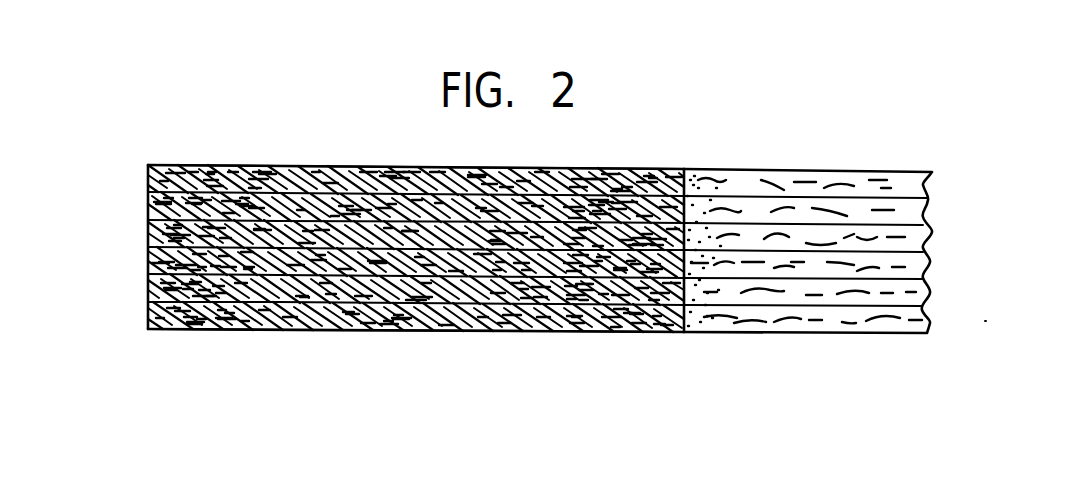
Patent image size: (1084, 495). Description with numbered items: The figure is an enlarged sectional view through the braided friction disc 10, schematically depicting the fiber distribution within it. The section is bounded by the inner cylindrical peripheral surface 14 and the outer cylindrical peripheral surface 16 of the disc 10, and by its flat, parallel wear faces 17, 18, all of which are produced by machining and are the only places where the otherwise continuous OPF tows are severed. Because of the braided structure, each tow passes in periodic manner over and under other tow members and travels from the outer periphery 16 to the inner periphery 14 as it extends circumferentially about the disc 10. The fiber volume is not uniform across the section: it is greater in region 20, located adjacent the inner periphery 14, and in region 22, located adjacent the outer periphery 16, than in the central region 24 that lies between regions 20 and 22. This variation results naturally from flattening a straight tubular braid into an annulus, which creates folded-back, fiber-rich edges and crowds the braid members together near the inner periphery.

The friction disc 10 is at (236, 116).
The inner cylindrical peripheral surface 14 is at (685, 210).
The outer cylindrical peripheral surface 16 is at (148, 213).
The wear face 17 is at (289, 166).
The wear face 18 is at (500, 334).
The region adjacent inner periphery 20 is at (684, 344).
The region adjacent outer periphery 22 is at (152, 337).
The central region 24 is at (279, 339).